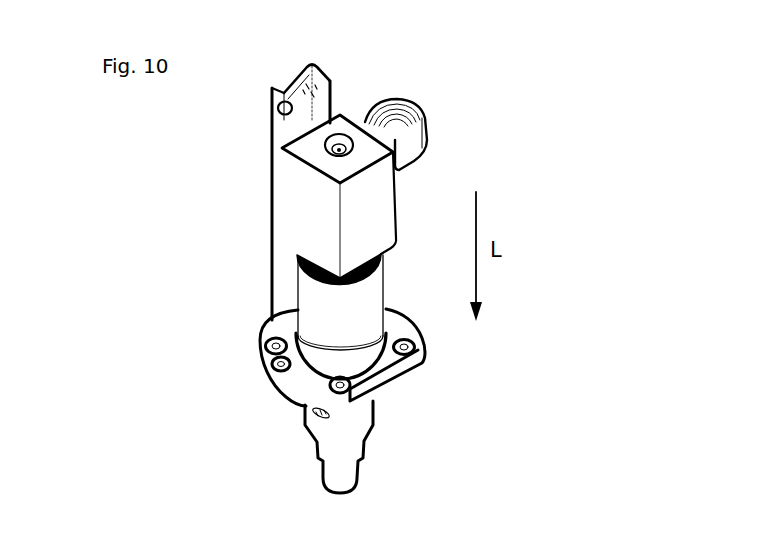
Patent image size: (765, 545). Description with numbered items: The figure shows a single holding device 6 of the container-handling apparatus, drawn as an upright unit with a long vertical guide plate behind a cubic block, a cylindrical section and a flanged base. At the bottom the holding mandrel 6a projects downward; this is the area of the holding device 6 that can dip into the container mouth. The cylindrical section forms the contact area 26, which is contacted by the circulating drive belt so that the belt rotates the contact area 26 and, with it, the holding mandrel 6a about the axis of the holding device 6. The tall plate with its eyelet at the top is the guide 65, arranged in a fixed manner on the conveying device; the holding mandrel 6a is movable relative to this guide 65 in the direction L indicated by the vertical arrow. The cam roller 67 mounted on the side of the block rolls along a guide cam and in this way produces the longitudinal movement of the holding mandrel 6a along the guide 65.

The holding device 6 is at (253, 247).
The holding mandrel 6a is at (343, 462).
The contact area 26 is at (313, 304).
The guide 65 is at (299, 89).
The cam roller 67 is at (397, 122).